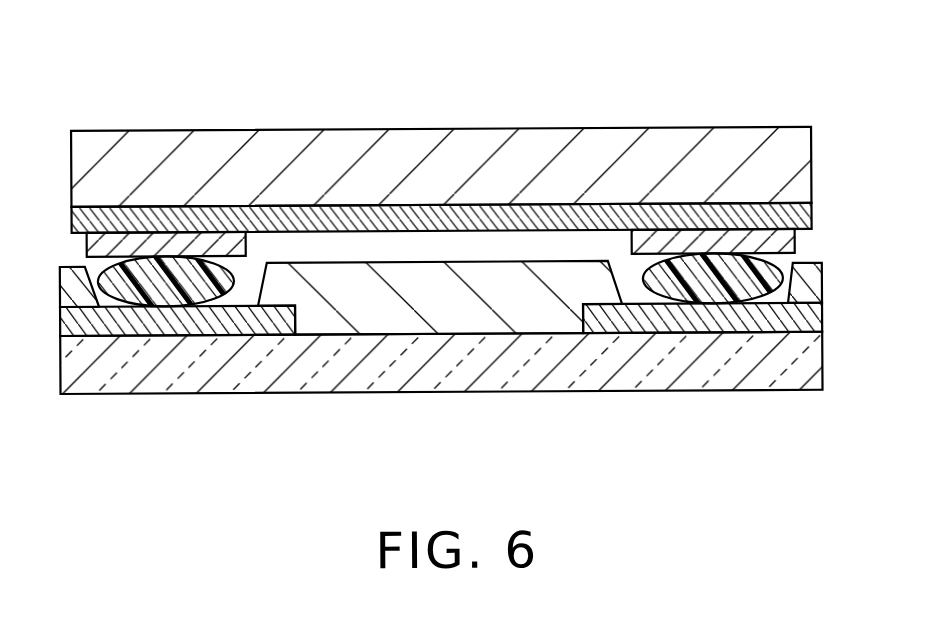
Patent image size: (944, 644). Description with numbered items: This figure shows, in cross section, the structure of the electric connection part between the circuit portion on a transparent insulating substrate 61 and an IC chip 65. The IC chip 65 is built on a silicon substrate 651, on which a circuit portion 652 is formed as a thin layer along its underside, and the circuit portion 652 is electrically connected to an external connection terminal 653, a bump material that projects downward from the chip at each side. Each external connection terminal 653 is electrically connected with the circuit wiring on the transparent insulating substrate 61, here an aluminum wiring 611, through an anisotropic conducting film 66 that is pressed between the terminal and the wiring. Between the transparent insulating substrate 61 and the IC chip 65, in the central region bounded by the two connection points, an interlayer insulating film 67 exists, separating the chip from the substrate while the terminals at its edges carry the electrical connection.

The IC chip 65 is at (441, 143).
The silicon substrate 651 is at (690, 167).
The circuit portion 652 is at (258, 218).
The external connection terminal 653 is at (152, 237).
The anisotropic conducting film 66 is at (172, 290).
The transparent insulating substrate 61 is at (352, 372).
The interlayer insulating film 67 is at (498, 298).
The aluminum wiring 611 is at (732, 318).